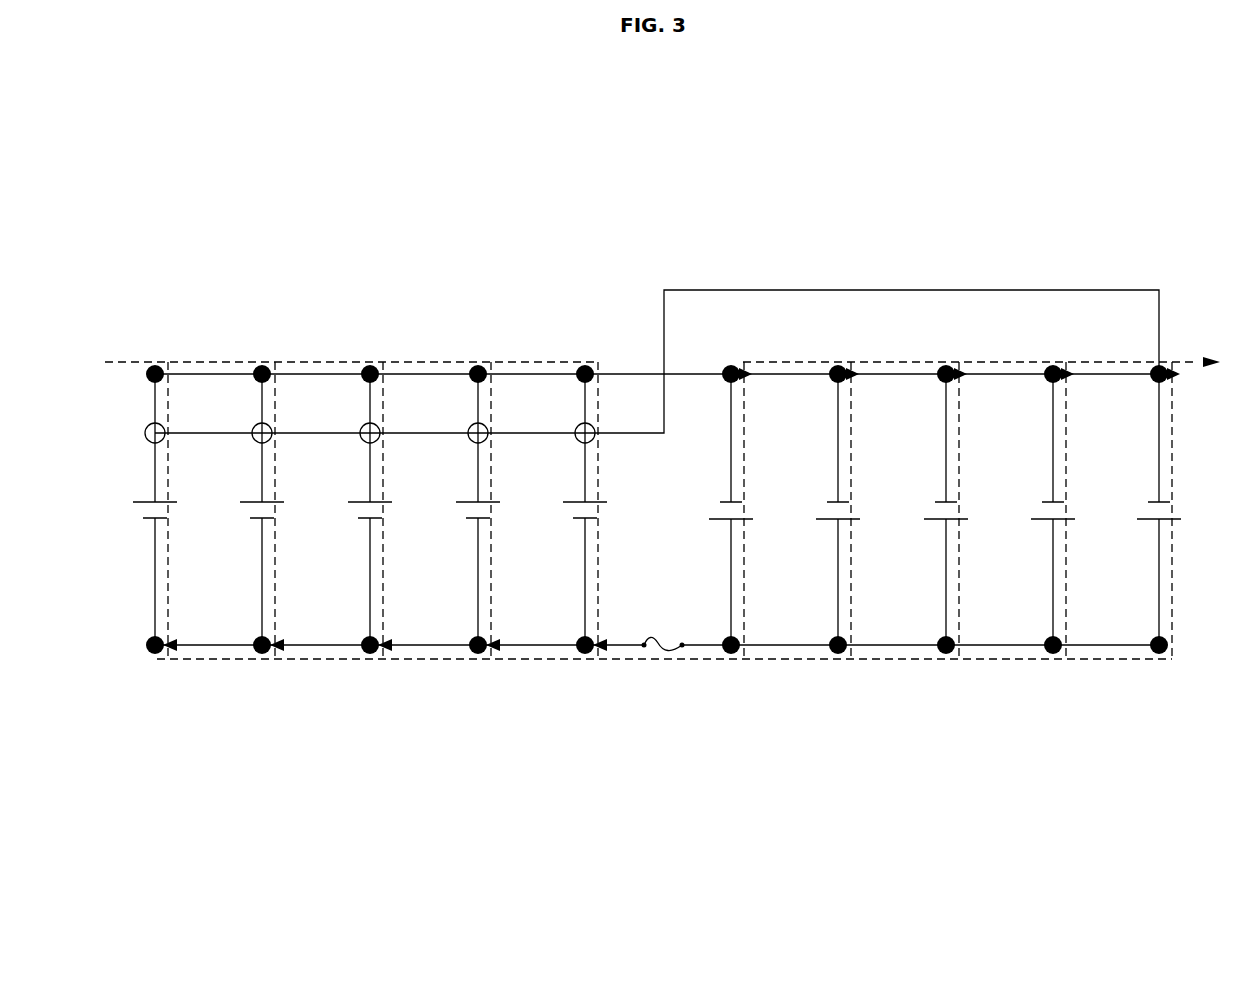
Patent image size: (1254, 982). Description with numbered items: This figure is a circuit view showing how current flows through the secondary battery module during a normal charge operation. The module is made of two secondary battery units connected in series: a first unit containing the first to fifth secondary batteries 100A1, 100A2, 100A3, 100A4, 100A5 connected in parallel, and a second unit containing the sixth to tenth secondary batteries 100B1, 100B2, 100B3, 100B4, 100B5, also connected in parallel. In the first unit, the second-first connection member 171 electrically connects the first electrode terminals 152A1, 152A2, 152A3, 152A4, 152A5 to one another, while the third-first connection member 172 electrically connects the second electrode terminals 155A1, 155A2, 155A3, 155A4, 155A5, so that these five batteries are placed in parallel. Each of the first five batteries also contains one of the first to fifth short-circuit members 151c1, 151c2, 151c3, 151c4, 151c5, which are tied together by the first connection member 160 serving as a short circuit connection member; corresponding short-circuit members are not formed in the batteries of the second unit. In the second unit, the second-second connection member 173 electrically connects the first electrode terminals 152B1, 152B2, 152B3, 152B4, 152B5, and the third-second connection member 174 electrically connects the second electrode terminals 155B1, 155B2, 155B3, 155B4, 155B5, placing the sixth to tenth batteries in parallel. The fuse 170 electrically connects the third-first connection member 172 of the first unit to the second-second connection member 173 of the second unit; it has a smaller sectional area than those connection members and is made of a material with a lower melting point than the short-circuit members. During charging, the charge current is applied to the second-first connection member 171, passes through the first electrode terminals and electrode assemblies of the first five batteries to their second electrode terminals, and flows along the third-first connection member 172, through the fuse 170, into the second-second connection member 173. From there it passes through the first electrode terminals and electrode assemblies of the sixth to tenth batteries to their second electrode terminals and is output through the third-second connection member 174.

The first connection member 160 is at (897, 290).
The fuse 170 is at (660, 660).
The second-first connection member 171 is at (318, 374).
The third-first connection member 172 is at (429, 647).
The second-second connection member 173 is at (893, 647).
The third-second connection member 174 is at (1110, 374).
The first electrode terminal 152A1 is at (155, 365).
The first electrode terminal 152A2 is at (262, 365).
The first electrode terminal 152A3 is at (370, 365).
The first electrode terminal 152A4 is at (478, 365).
The first electrode terminal 152A5 is at (585, 365).
The first short-circuit member 151c1 is at (145, 428).
The second short-circuit member 151c2 is at (252, 428).
The third short-circuit member 151c3 is at (360, 428).
The fourth short-circuit member 151c4 is at (468, 428).
The fifth short-circuit member 151c5 is at (575, 428).
The first secondary battery 100A1 is at (143, 500).
The second secondary battery 100A2 is at (250, 500).
The third secondary battery 100A3 is at (358, 500).
The fourth secondary battery 100A4 is at (466, 500).
The fifth secondary battery 100A5 is at (573, 500).
The second electrode terminal 155A1 is at (155, 655).
The second electrode terminal 155A2 is at (262, 655).
The second electrode terminal 155A3 is at (370, 655).
The second electrode terminal 155A4 is at (478, 655).
The second electrode terminal 155A5 is at (585, 655).
The second electrode terminal 155B1 is at (729, 364).
The second electrode terminal 155B2 is at (836, 364).
The second electrode terminal 155B3 is at (944, 364).
The second electrode terminal 155B4 is at (1051, 364).
The second electrode terminal 155B5 is at (1162, 368).
The sixth secondary battery 100B1 is at (716, 520).
The seventh secondary battery 100B2 is at (823, 520).
The eighth secondary battery 100B3 is at (931, 520).
The ninth secondary battery 100B4 is at (1038, 520).
The tenth secondary battery 100B5 is at (1144, 520).
The first electrode terminal 152B1 is at (731, 655).
The first electrode terminal 152B2 is at (838, 655).
The first electrode terminal 152B3 is at (946, 655).
The first electrode terminal 152B4 is at (1053, 655).
The first electrode terminal 152B5 is at (1159, 655).